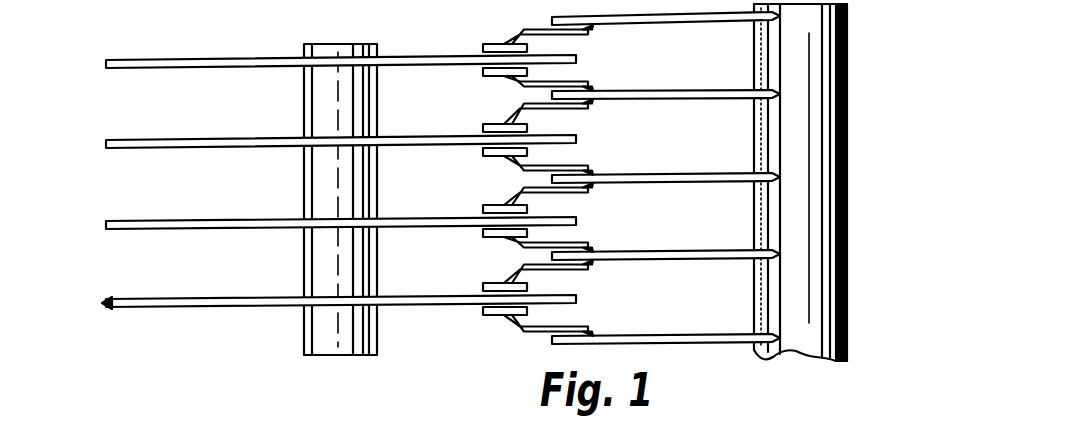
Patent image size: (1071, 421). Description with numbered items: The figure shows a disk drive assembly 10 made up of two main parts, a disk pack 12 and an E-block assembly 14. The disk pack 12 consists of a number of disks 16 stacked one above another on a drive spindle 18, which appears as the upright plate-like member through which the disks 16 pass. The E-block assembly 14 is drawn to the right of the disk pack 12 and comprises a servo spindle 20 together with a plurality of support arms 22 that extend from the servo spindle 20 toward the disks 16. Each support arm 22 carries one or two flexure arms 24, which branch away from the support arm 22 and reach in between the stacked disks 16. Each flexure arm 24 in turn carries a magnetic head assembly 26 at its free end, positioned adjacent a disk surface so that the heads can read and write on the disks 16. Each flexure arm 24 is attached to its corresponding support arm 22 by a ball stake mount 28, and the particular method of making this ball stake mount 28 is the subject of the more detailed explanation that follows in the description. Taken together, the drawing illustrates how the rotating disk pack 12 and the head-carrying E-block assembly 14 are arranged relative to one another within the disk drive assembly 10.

The disk drive assembly 10 is at (178, 46).
The disk pack 12 is at (111, 64).
The E-block assembly 14 is at (846, 7).
The disks 16 is at (123, 70).
The drive spindle 18 is at (320, 44).
The servo spindle 20 is at (757, 352).
The support arms 22 is at (671, 24).
The flexure arms 24 is at (512, 36).
The magnetic head assembly 26 is at (487, 46).
The ball stake mount 28 is at (591, 33).